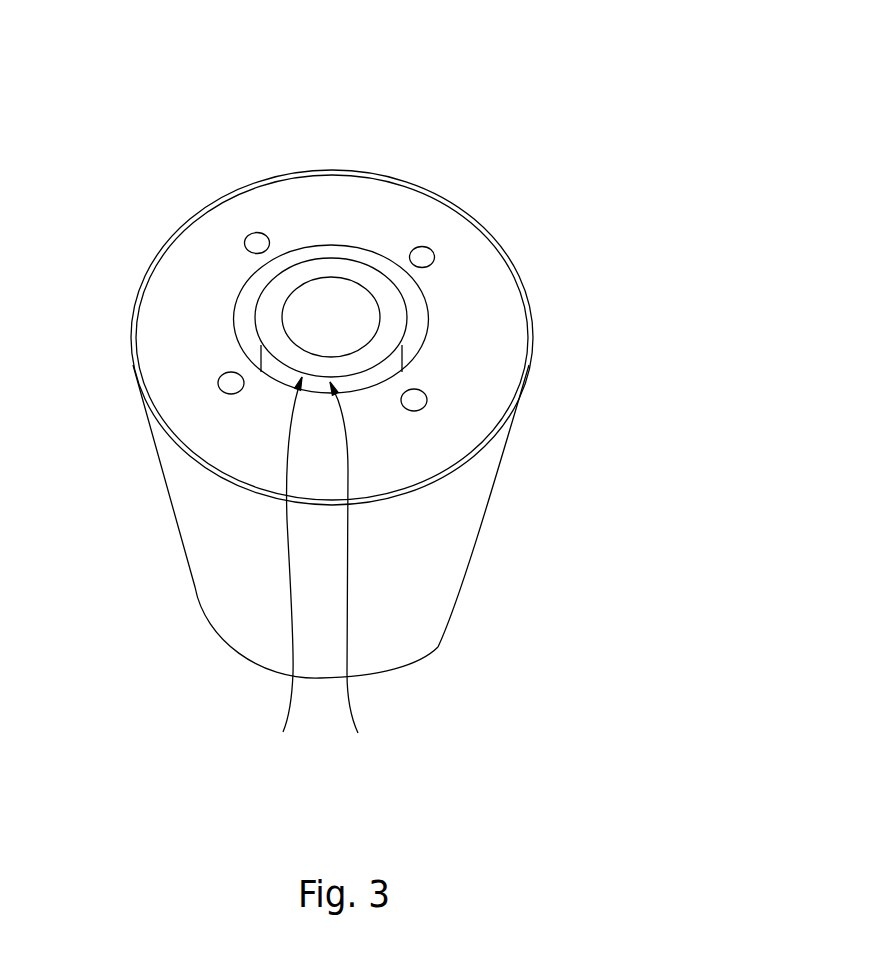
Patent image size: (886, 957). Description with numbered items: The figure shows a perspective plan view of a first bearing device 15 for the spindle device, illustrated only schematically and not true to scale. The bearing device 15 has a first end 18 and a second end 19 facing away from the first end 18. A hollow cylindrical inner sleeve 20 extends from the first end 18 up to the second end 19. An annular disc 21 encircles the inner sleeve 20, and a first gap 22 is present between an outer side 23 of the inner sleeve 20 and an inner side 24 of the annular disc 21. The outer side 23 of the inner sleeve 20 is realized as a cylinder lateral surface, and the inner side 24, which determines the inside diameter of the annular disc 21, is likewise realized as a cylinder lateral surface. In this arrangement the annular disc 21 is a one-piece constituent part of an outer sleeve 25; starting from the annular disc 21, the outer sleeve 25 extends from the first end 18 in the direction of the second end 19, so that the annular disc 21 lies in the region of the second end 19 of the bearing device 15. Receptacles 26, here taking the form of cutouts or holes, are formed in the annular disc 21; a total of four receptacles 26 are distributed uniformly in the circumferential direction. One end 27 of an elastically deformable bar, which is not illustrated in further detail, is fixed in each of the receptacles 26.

The bearing device 15 is at (496, 104).
The first end 18 is at (446, 660).
The second end 19 is at (157, 187).
The inner sleeve 20 is at (332, 270).
The annular disc 21 is at (488, 345).
The first gap 22 is at (422, 304).
The outer side 23 is at (274, 564).
The inner side 24 is at (362, 567).
The outer sleeve 25 is at (413, 542).
The receptacles 26 is at (250, 218).
The end 27 is at (424, 258).